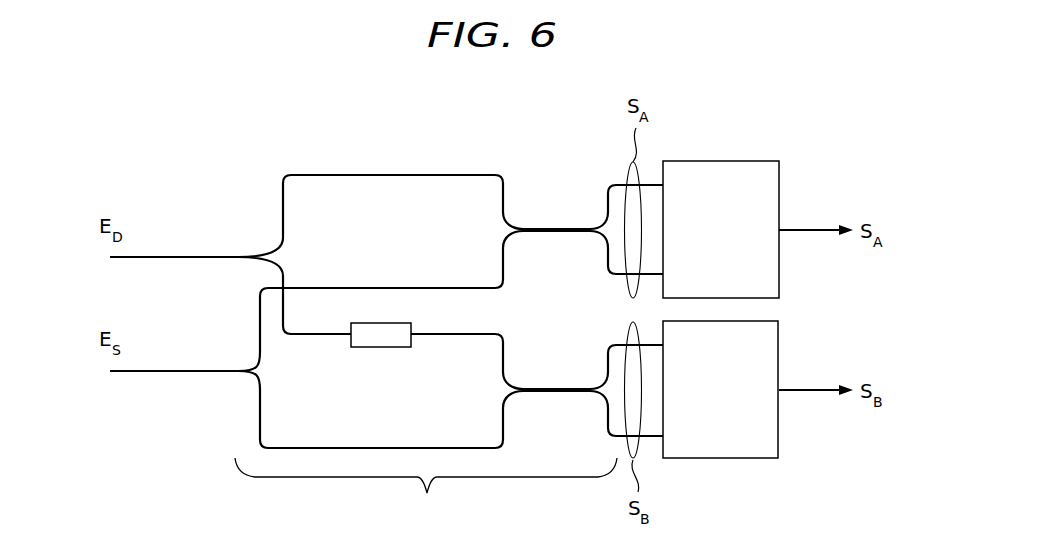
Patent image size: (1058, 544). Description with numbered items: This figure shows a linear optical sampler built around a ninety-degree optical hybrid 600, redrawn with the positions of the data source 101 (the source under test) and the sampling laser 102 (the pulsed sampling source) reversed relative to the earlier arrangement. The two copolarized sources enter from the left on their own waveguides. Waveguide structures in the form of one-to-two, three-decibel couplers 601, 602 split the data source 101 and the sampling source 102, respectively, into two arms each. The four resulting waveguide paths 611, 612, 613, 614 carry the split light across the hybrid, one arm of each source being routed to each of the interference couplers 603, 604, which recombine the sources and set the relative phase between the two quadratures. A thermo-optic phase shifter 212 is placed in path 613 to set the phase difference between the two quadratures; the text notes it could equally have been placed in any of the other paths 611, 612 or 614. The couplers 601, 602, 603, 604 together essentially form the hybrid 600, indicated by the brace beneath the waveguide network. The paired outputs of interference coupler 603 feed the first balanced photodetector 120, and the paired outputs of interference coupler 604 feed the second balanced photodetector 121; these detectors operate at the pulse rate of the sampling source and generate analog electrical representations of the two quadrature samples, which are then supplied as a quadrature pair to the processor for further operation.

The data source 101 is at (168, 256).
The sampling laser 102 is at (168, 370).
The 1:2 coupler 601 is at (276, 258).
The 1:2 coupler 602 is at (254, 372).
The path 611 is at (382, 175).
The path 612 is at (382, 288).
The path 613 is at (446, 334).
The path 614 is at (382, 448).
The thermo-optic phase shifter 212 is at (385, 348).
The interference coupler 603 is at (583, 229).
The interference coupler 604 is at (583, 390).
The balanced photodetector 120 is at (720, 160).
The balanced photodetector 121 is at (720, 460).
The hybrid 600 is at (426, 491).